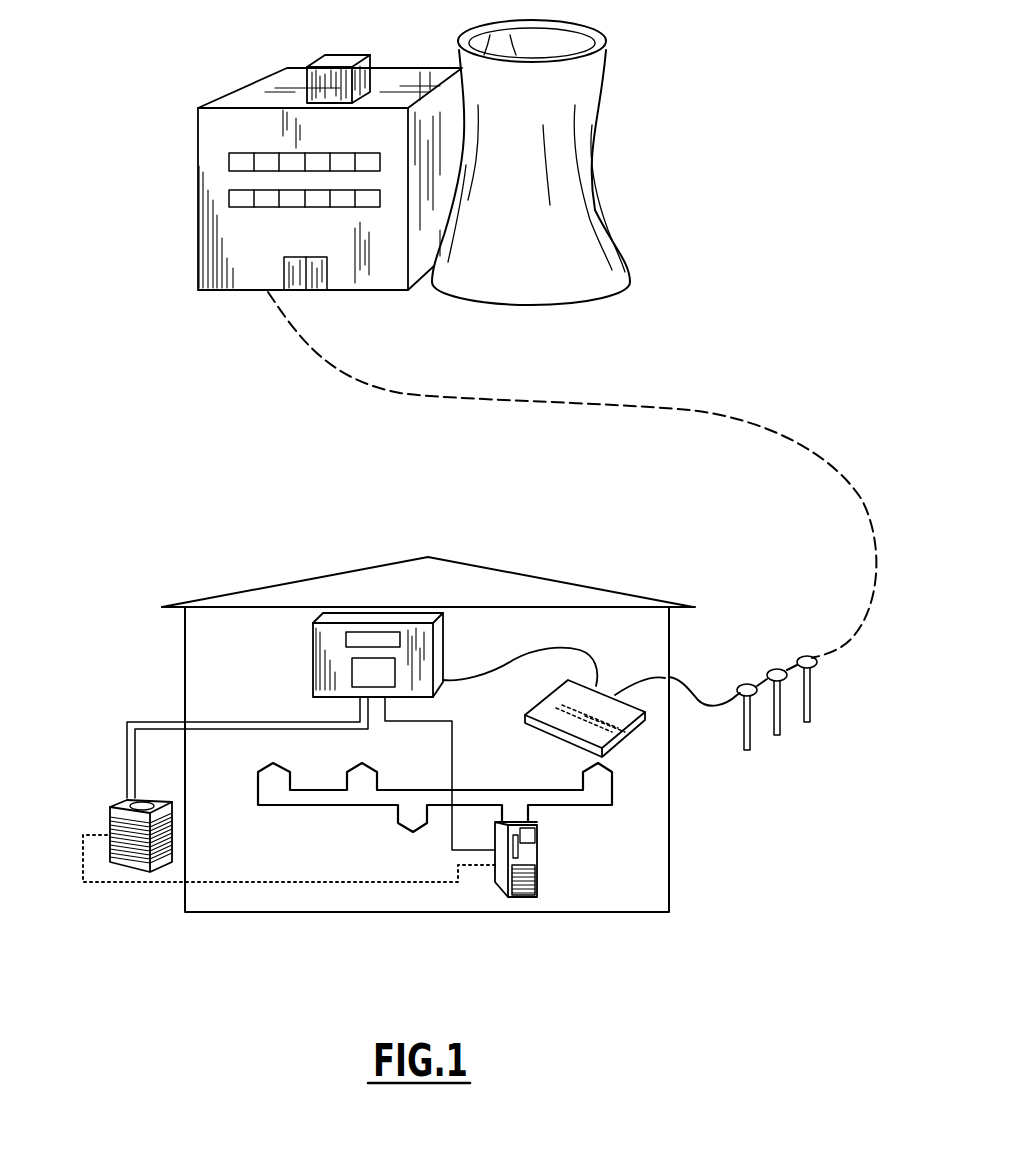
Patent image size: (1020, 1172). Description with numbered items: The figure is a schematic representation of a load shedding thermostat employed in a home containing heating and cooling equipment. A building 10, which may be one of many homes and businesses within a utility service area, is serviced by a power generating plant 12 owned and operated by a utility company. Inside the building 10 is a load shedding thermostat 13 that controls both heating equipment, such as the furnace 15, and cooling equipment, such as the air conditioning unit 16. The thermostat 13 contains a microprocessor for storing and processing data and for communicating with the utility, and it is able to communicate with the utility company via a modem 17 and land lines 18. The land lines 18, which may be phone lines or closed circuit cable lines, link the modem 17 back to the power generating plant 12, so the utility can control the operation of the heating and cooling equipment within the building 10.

The building 10 is at (242, 940).
The power generating plant 12 is at (146, 215).
The load shedding thermostat 13 is at (366, 600).
The furnace 15 is at (537, 878).
The air conditioning unit 16 is at (127, 866).
The modem 17 is at (627, 735).
The land lines 18 is at (690, 408).